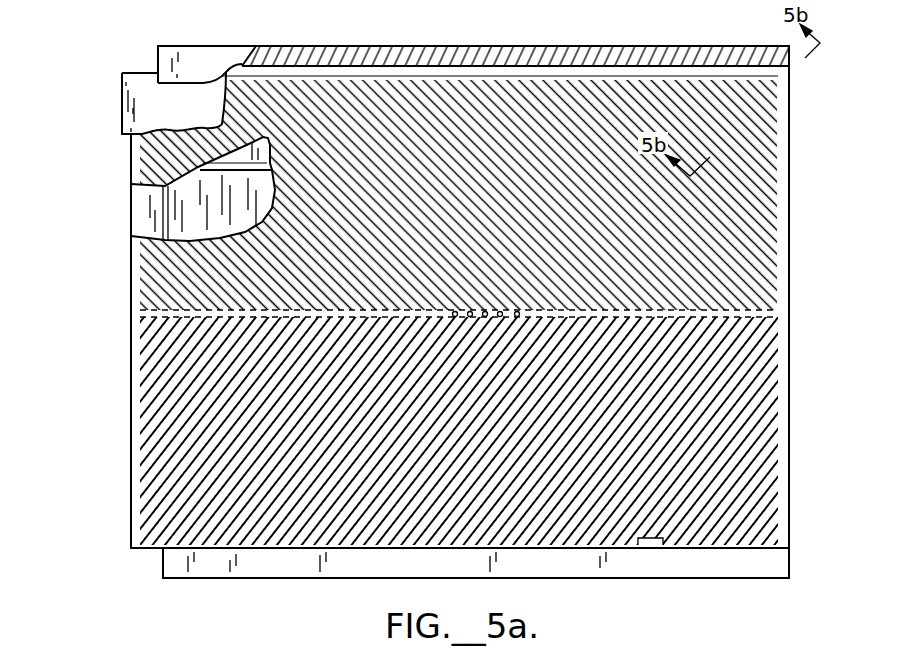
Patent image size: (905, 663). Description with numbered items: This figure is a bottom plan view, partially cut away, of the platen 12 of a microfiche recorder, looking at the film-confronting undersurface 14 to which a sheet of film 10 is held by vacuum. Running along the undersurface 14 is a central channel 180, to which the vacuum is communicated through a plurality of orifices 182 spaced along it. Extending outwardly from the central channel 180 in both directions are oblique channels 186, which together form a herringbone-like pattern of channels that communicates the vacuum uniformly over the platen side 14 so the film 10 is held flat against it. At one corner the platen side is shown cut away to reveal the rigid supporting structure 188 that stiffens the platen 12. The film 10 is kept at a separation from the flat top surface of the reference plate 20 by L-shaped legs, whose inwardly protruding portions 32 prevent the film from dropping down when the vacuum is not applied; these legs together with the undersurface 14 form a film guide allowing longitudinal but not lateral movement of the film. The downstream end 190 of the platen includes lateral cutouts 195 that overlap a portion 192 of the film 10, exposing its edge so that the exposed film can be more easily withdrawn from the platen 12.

The sheet of film 10 is at (147, 100).
The platen 12 is at (413, 31).
The undersurface of platen 14 is at (569, 195).
The reference plate 20 is at (773, 312).
The inwardly protruding portions 32 is at (215, 52).
The central channel 180 is at (572, 318).
The orifices 182 is at (503, 305).
The oblique channels 186 is at (377, 233).
The rigid supporting structure 188 is at (197, 205).
The downstream end of platen 190 is at (130, 385).
The portion of film 192 is at (135, 80).
The lateral cutouts 195 is at (140, 62).